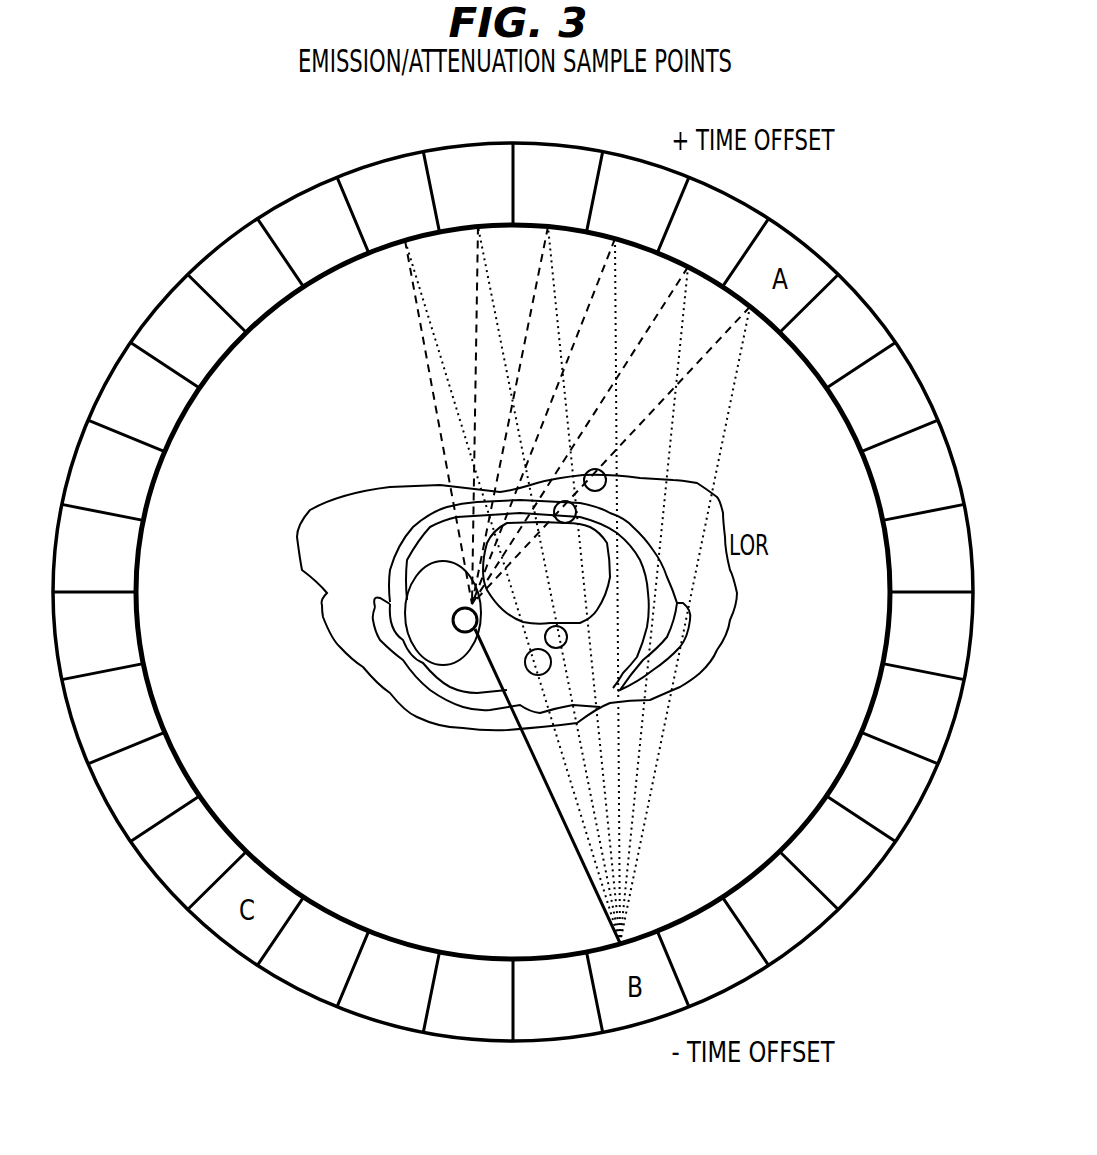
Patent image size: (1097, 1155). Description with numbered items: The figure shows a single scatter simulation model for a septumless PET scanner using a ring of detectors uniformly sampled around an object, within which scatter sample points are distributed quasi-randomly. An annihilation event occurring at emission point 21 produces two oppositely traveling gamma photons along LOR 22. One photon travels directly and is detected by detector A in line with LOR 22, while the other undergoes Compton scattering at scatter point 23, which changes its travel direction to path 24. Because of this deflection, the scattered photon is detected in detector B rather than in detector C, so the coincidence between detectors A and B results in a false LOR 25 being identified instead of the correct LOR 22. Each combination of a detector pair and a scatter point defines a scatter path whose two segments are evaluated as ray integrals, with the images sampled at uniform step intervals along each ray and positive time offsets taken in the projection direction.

The emission point 21 is at (522, 516).
The LOR 22 is at (724, 343).
The scatter point 23 is at (424, 654).
The path 24 is at (548, 791).
The false LOR 25 is at (718, 478).